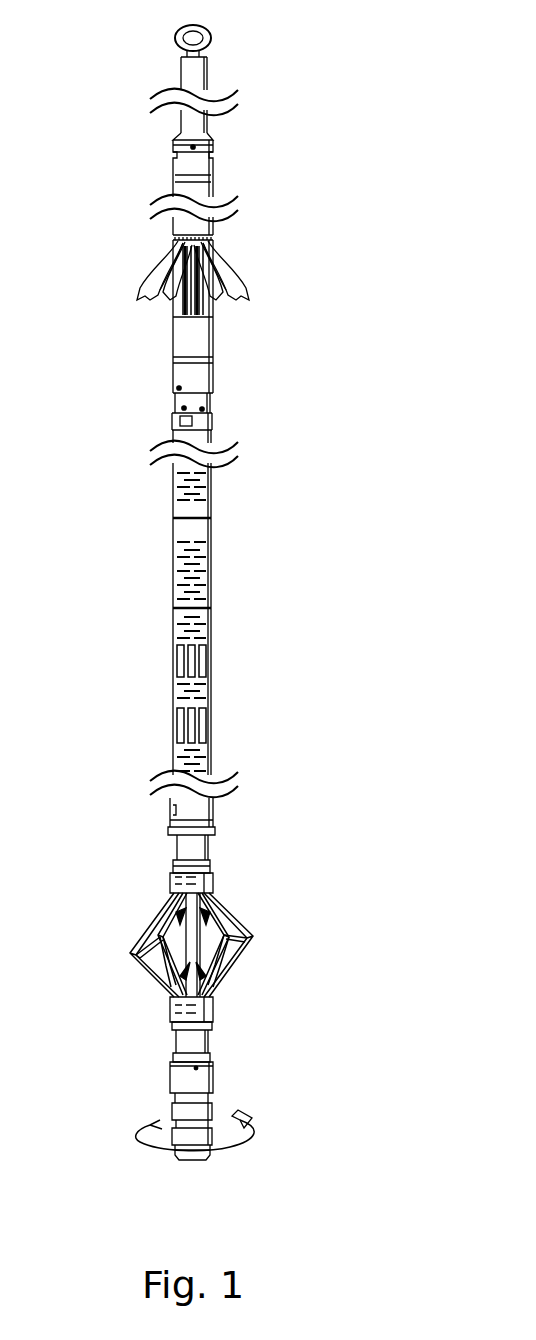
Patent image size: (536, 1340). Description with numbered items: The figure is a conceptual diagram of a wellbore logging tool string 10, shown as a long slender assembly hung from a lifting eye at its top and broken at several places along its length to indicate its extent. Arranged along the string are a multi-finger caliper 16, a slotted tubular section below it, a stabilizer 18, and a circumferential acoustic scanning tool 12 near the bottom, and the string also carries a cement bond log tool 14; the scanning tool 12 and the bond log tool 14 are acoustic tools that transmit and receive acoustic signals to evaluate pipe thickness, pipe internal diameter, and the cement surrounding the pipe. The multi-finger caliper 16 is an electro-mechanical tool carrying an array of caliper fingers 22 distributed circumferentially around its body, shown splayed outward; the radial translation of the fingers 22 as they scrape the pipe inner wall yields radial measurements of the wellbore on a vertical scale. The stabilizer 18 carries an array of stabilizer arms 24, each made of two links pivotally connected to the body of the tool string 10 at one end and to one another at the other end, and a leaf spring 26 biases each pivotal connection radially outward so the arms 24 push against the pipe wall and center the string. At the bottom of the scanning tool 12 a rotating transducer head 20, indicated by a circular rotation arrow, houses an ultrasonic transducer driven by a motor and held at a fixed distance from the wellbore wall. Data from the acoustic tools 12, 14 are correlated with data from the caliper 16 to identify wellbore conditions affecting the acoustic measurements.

The wellbore logging tool string 10 is at (322, 60).
The circumferential acoustic scanning tool (CAST) 12 is at (165, 1078).
The cement bond log tool (CBL) 14 is at (171, 665).
The multi-finger caliper (MFC) 16 is at (218, 332).
The stabilizer 18 is at (257, 938).
The rotating transducer head 20 is at (187, 1160).
The caliper fingers 22 is at (167, 295).
The stabilizer arms 24 is at (167, 930).
The leaf spring 26 is at (166, 988).